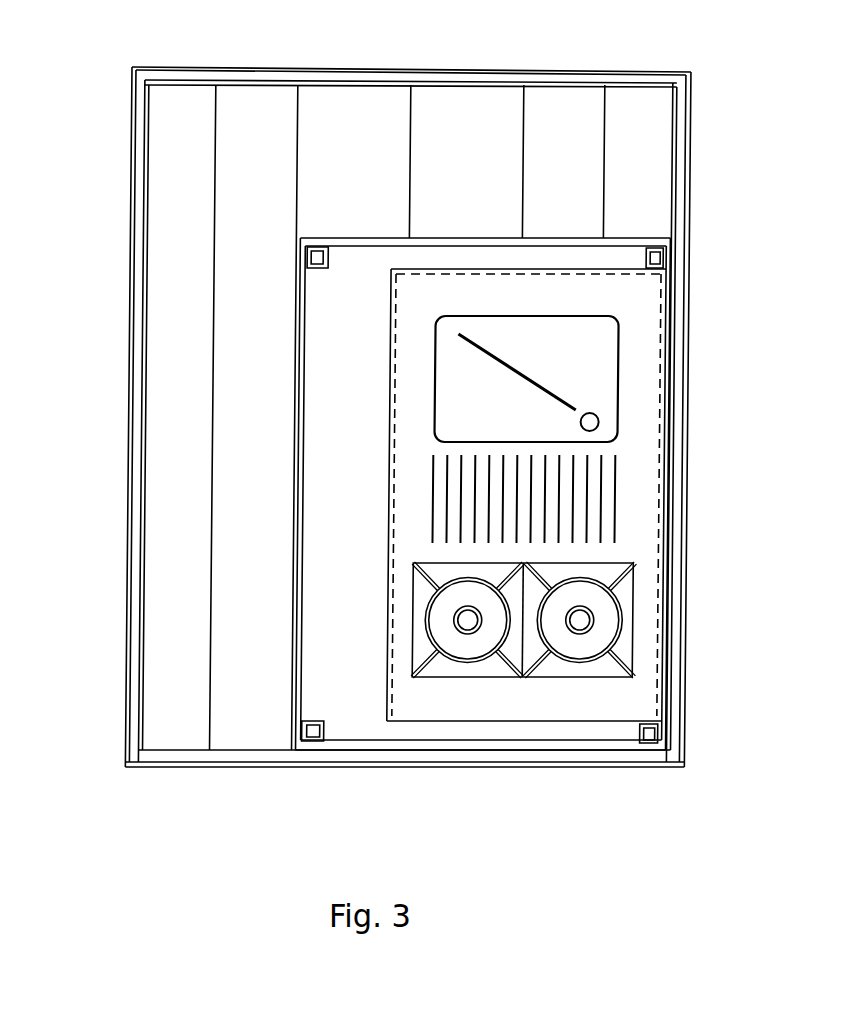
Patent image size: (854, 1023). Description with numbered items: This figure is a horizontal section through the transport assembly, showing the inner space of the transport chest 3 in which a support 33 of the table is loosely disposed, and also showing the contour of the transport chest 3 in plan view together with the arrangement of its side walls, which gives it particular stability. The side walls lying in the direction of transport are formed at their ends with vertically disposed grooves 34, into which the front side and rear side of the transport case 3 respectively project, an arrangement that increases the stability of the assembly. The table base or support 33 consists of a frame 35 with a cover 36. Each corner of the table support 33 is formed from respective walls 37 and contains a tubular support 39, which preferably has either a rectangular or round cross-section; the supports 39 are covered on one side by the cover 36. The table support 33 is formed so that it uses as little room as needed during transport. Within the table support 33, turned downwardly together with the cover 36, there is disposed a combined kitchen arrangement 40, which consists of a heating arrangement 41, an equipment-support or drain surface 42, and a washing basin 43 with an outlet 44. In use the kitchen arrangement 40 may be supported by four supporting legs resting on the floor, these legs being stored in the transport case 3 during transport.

The transport chest 3 is at (118, 260).
The support of the table 33 is at (470, 232).
The grooves 34 is at (133, 68).
The frame 35 is at (357, 231).
The cover 36 is at (356, 488).
The walls 37 is at (556, 245).
The tubular support 39 is at (663, 265).
The combined kitchen arrangement 40 is at (372, 630).
The heating arrangement 41 is at (520, 690).
The equipment-support or drain surface 42 is at (592, 505).
The washing basin 43 is at (600, 365).
The outlet 44 is at (599, 418).